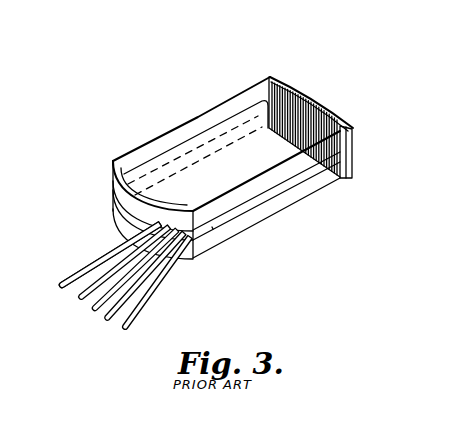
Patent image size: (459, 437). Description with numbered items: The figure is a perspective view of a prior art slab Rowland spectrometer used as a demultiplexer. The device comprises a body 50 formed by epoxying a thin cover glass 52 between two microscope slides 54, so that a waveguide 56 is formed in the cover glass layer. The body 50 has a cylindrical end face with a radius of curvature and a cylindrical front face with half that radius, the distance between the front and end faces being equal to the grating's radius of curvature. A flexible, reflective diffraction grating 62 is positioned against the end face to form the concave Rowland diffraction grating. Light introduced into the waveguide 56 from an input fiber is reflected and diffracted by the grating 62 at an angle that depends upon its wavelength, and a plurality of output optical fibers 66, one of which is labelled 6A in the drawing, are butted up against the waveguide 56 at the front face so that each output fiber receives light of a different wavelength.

The body 50 is at (112, 156).
The cover glass 52 is at (274, 192).
The microscope slides 54 is at (183, 133).
The waveguide 56 is at (212, 227).
The diffraction grating 62 is at (327, 106).
The output optical fibers 66 is at (103, 268).
The optical fiber 6A is at (88, 270).